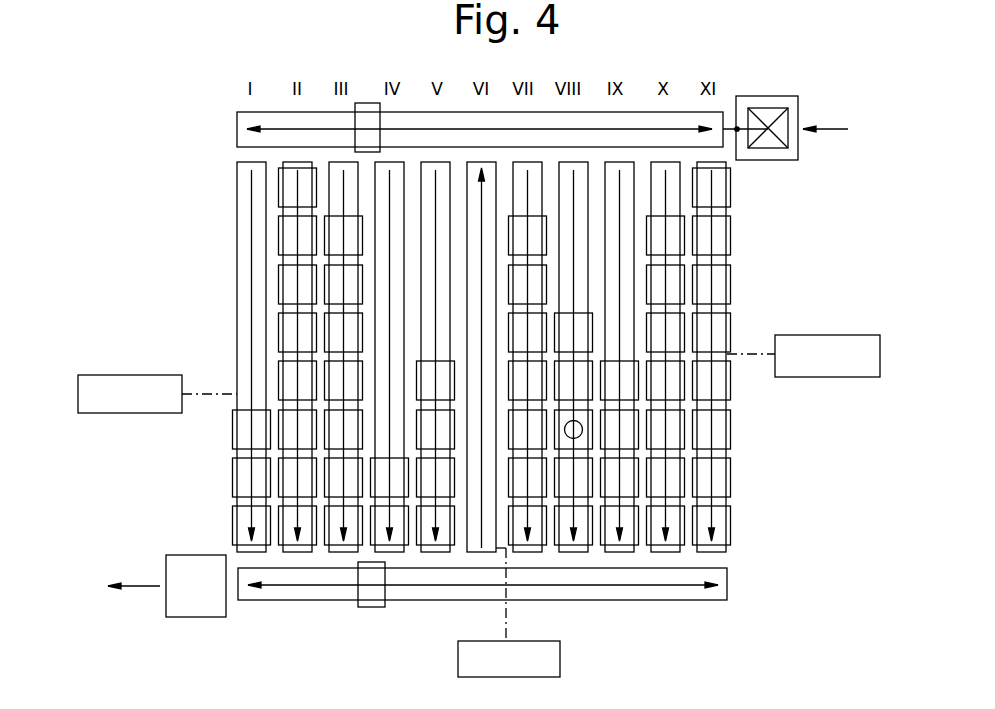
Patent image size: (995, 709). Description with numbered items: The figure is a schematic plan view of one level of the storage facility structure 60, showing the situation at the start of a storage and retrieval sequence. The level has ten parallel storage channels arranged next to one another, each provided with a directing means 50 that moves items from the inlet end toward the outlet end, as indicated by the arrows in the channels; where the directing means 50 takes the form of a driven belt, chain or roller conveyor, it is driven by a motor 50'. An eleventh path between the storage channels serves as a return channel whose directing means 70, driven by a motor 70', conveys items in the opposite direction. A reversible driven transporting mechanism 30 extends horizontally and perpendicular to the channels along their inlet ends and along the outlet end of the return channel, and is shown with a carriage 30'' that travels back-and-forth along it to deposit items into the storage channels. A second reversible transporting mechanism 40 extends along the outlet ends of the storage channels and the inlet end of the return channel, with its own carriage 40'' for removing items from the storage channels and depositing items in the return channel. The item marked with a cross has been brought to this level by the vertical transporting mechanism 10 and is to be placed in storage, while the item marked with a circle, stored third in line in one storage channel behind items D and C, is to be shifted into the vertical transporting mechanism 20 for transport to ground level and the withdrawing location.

The vertical transporting mechanism 10 is at (763, 153).
The vertical transporting mechanism 20 is at (190, 606).
The driven transporting mechanism 30 is at (431, 128).
The carriage 30'' is at (355, 92).
The driven transporting mechanism 40 is at (482, 606).
The carriage 40'' is at (365, 620).
The directing means 50 is at (212, 357).
The motor 50' is at (486, 405).
The structure 60 is at (203, 336).
The directing means 70 is at (460, 403).
The motor 70' is at (544, 612).